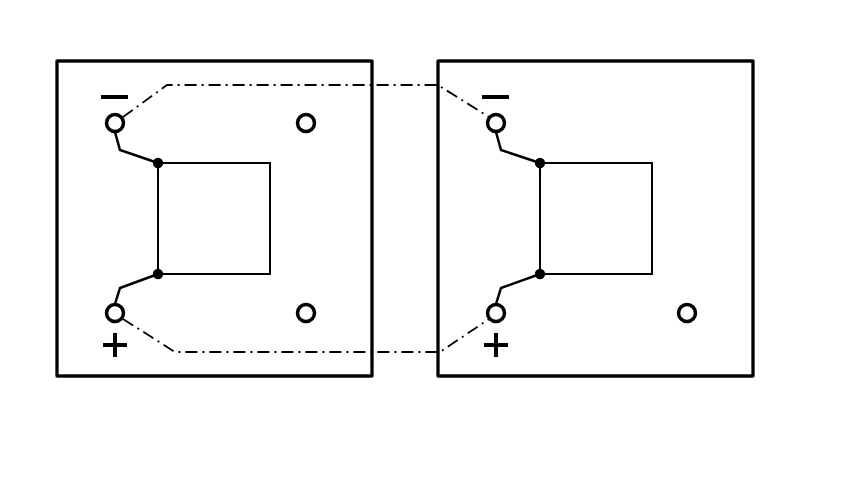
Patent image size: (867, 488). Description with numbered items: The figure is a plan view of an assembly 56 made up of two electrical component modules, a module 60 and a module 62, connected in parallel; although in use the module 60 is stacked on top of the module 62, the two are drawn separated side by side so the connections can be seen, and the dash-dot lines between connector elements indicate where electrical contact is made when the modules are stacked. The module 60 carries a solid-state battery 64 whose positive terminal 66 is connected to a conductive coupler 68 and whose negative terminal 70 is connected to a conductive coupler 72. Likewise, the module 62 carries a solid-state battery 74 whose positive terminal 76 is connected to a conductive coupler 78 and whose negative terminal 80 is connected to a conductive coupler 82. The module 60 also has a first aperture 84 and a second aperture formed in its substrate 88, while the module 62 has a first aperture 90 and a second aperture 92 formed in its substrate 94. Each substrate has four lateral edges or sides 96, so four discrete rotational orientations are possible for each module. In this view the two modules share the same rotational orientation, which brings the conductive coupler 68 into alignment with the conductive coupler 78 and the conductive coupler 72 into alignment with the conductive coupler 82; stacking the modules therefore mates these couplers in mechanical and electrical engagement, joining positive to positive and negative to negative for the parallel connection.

The assembly 56 is at (398, 440).
The module 60 is at (668, 398).
The module 62 is at (288, 400).
The solid-state battery 64 is at (596, 218).
The positive terminal 66 is at (542, 277).
The conductive coupler 68 is at (426, 279).
The negative terminal 70 is at (542, 160).
The conductive coupler 72 is at (487, 123).
The solid-state battery 74 is at (214, 218).
The positive terminal 76 is at (160, 277).
The conductive coupler 78 is at (106, 313).
The negative terminal 80 is at (160, 160).
The conductive coupler 82 is at (106, 123).
The first aperture 84 is at (687, 322).
The substrate 88 is at (700, 220).
The first aperture 90 is at (306, 322).
The second aperture 92 is at (306, 114).
The substrate 94 is at (320, 220).
The lateral edges 96 is at (57, 92).